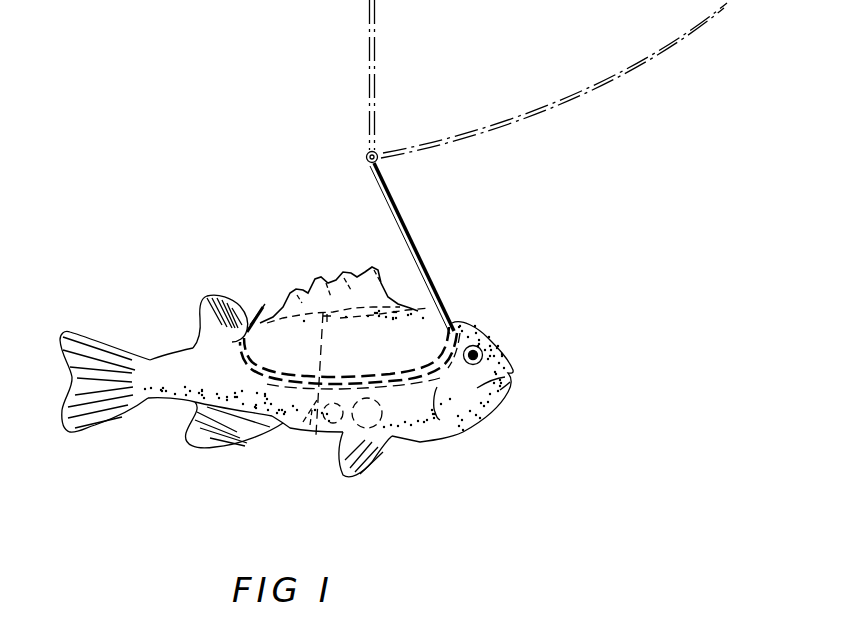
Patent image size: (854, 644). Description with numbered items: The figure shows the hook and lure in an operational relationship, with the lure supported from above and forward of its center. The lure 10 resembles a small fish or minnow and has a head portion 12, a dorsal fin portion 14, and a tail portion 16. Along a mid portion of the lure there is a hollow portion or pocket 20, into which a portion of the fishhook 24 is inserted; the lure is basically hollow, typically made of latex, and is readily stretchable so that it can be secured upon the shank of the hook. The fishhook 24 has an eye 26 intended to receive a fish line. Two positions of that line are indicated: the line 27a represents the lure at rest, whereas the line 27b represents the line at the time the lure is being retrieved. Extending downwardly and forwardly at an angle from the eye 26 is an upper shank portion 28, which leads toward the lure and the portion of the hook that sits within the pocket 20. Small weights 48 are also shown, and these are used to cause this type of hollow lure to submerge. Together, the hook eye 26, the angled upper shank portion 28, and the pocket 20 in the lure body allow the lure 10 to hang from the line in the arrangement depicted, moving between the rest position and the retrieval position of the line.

The lure 10 is at (192, 350).
The head portion 12 is at (453, 407).
The dorsal fin portion 14 is at (337, 282).
The tail portion 16 is at (83, 432).
The hollow portion or pocket 20 is at (312, 440).
The fishhook 24 is at (443, 311).
The eye 26 is at (365, 157).
The line 27a is at (378, 75).
The line 27b is at (628, 58).
The upper shank portion 28 is at (414, 233).
The small weights 48 is at (406, 448).